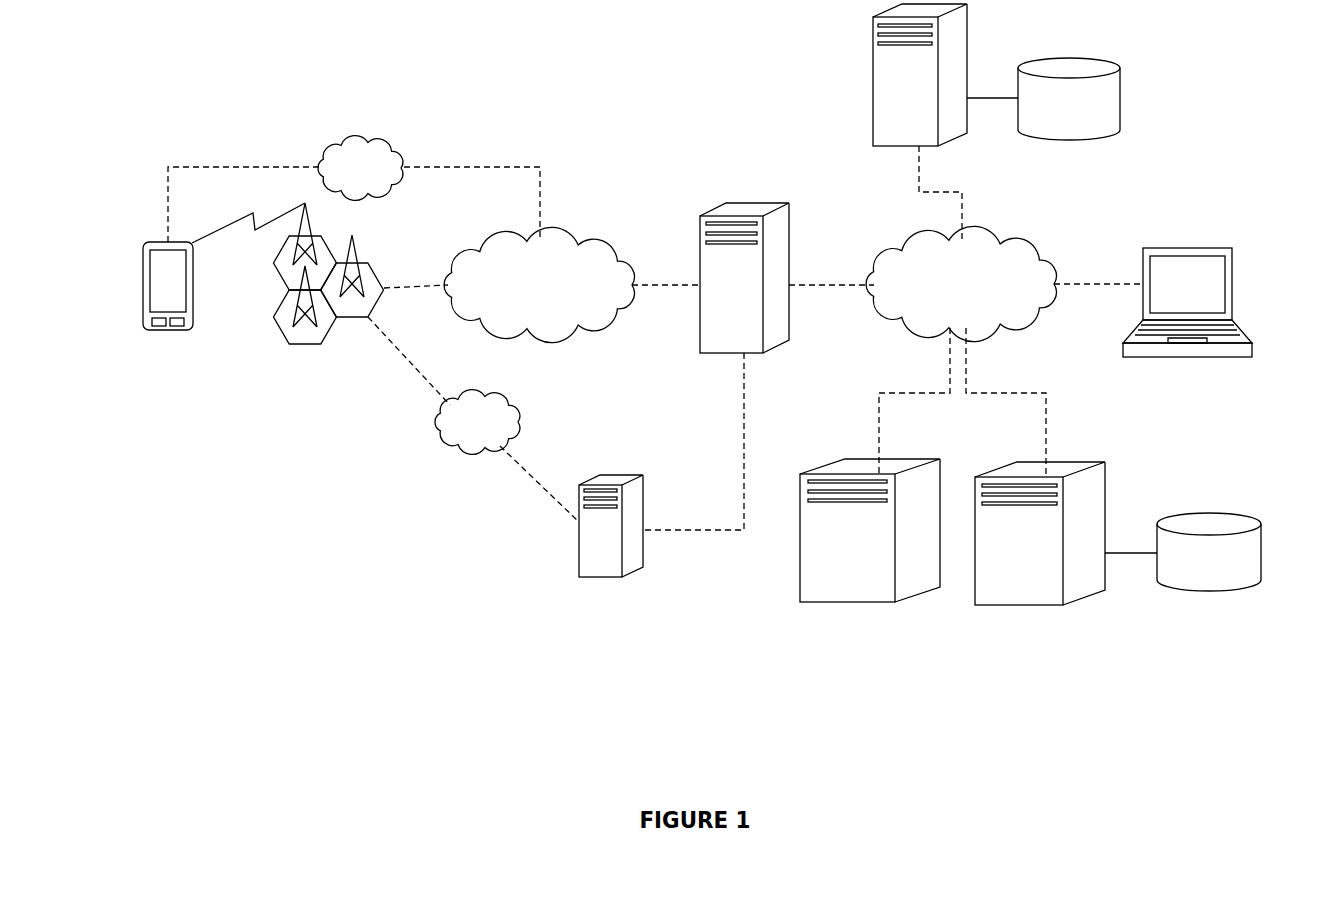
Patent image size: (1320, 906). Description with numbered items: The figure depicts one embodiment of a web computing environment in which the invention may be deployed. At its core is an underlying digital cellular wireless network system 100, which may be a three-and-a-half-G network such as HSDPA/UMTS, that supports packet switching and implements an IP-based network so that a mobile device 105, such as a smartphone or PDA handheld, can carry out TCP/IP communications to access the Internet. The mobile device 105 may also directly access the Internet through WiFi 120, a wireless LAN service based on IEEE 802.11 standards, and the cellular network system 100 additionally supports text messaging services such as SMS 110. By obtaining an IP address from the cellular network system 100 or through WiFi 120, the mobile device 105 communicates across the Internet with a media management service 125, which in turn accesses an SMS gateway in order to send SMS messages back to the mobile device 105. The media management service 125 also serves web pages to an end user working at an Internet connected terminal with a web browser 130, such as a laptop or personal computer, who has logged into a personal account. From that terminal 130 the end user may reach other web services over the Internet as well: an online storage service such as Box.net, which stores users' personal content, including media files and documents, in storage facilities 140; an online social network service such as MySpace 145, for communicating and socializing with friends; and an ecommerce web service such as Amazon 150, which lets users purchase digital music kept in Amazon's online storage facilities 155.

The mobile device 105 is at (161, 321).
The digital cellular wireless network system 100 is at (329, 308).
The WiFi 120 is at (385, 136).
The SMS 110 is at (449, 442).
The media management service 125 is at (706, 281).
The storage facilities 140 is at (1069, 124).
The Internet connected terminal with a web browser 130 is at (1178, 335).
The MySpace 145 is at (829, 547).
The Amazon 150 is at (1013, 558).
The Amazon's online storage facilities 155 is at (1209, 581).